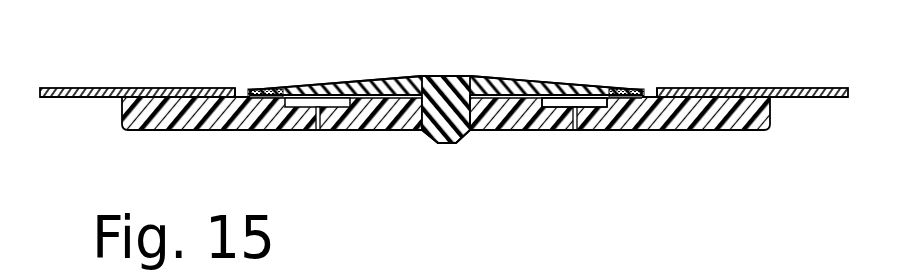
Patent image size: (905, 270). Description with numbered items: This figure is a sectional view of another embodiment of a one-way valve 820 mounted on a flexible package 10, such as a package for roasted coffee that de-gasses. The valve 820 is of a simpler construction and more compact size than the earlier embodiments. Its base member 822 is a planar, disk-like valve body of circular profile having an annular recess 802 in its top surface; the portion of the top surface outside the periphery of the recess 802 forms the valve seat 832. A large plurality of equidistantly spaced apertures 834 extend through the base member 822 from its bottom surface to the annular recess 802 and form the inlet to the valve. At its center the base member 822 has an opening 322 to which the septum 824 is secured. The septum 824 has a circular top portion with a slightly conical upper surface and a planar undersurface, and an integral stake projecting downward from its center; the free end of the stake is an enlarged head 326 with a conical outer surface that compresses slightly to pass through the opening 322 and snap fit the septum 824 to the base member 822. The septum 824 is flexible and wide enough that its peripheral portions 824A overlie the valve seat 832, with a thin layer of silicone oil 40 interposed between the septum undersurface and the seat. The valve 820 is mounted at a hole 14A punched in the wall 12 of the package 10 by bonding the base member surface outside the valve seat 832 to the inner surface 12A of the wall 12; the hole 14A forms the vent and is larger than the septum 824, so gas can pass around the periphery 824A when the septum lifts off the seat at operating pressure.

The flexible package 10 is at (801, 89).
The wall 12 is at (113, 90).
The inner surface 12A is at (103, 98).
The hole 14A is at (233, 92).
The silicone oil 40 is at (278, 91).
The opening 322 is at (472, 109).
The enlarged head 326 is at (433, 137).
The annular recess 802 is at (568, 108).
The valve 820 is at (469, 171).
The base member 822 is at (721, 133).
The septum 824 is at (439, 72).
The peripheral portion 824A is at (253, 90).
The valve seat 832 is at (263, 98).
The apertures 834 is at (319, 109).